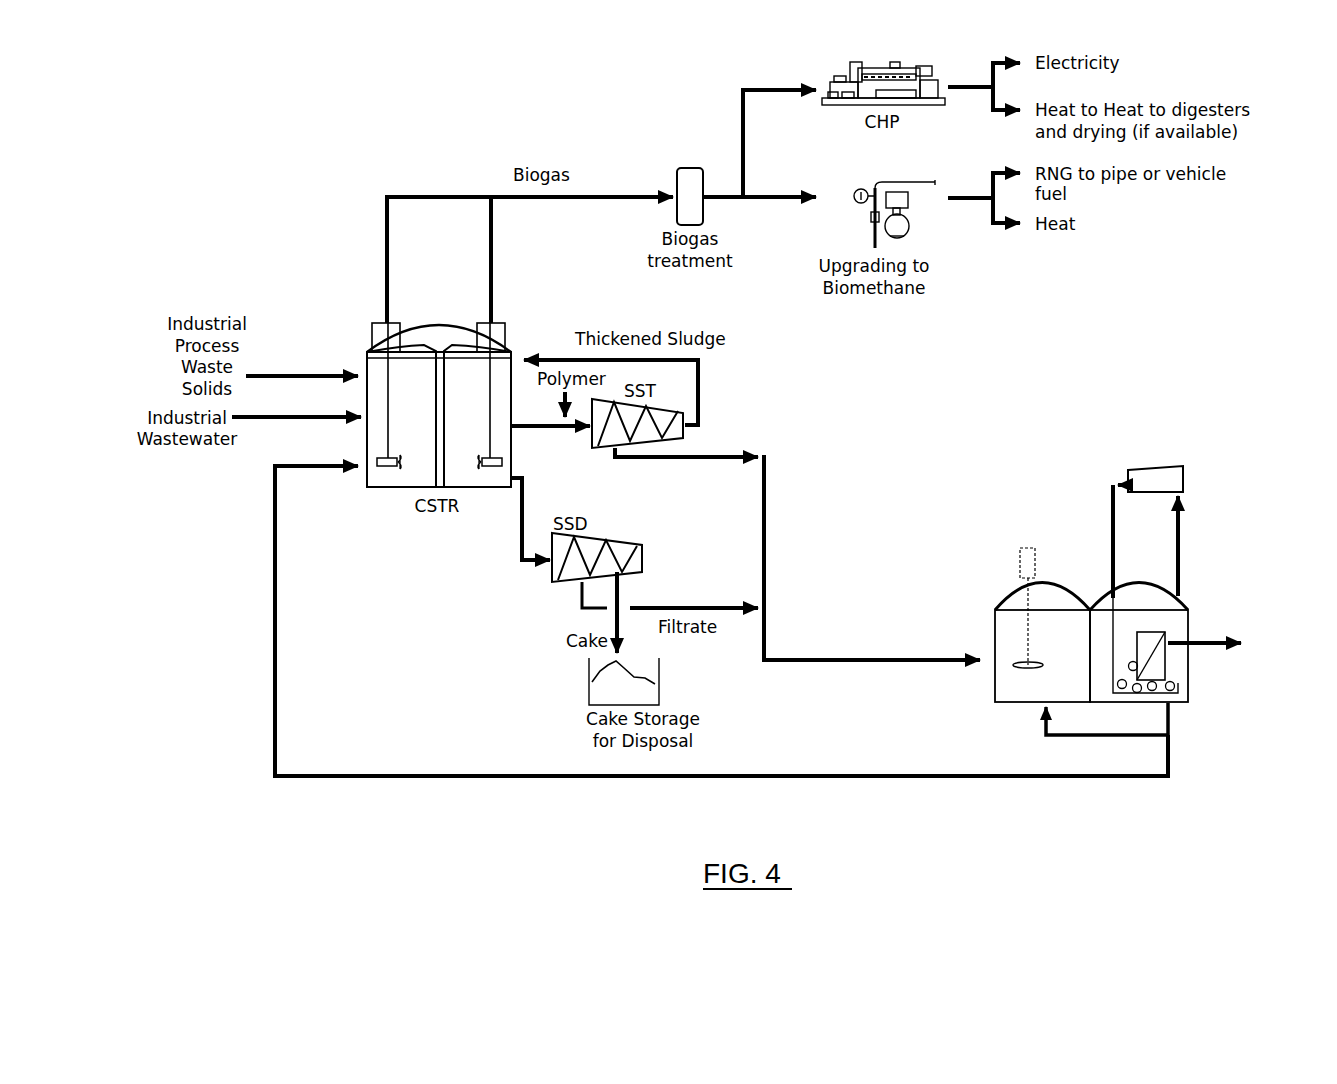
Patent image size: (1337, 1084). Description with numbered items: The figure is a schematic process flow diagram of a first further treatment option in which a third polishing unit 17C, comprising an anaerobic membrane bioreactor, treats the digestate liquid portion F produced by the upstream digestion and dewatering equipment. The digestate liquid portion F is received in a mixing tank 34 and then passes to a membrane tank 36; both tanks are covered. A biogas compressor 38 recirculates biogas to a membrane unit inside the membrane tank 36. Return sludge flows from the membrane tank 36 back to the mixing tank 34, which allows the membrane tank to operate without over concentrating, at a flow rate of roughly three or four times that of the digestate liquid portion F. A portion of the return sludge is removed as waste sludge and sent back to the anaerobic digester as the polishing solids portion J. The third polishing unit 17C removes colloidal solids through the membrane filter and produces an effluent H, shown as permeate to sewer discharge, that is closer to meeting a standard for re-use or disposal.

The mixing tank 34 is at (1013, 703).
The membrane tank 36 is at (1185, 676).
The biogas compressor 38 is at (1183, 474).
The third polishing unit 17C is at (1136, 627).
The digestate liquid portion F is at (932, 656).
The effluent H is at (1208, 640).
The polishing solids portion J is at (966, 772).